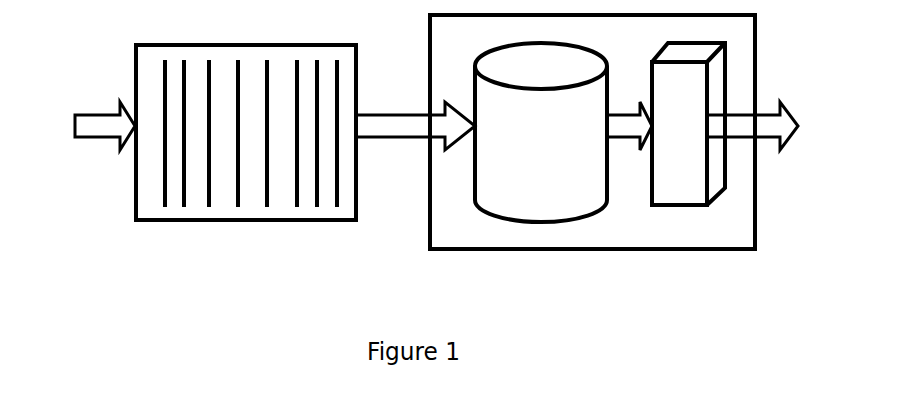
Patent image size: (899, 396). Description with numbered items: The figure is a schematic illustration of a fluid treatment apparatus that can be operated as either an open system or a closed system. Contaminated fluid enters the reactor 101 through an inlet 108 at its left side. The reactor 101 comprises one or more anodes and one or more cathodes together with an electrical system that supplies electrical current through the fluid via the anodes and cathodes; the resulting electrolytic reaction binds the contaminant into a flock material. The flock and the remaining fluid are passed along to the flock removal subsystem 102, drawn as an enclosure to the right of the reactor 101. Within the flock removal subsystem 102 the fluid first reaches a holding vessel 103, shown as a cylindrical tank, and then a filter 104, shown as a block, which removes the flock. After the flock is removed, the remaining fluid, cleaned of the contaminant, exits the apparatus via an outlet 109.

The reactor 101 is at (145, 222).
The flock removal subsystem 102 is at (430, 249).
The holding vessel 103 is at (513, 222).
The filter 104 is at (670, 212).
The inlet 108 is at (110, 112).
The outlet 109 is at (787, 143).